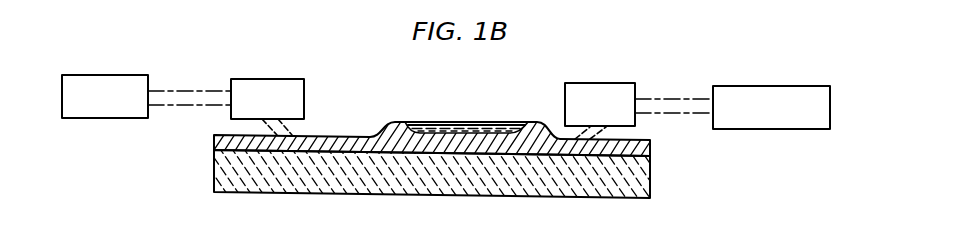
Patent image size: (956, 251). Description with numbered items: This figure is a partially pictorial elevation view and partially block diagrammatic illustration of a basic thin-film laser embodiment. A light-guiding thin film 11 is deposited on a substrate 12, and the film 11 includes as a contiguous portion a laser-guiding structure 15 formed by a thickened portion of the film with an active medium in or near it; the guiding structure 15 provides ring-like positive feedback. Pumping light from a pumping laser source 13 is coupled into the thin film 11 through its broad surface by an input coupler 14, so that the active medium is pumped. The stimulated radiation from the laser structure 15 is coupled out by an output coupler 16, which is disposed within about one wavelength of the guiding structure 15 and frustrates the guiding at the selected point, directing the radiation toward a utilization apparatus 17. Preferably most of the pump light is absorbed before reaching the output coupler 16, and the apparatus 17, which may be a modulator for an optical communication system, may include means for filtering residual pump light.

The light-guiding thin film 11 is at (214, 135).
The substrate 12 is at (627, 190).
The pumping laser source 13 is at (87, 113).
The input coupler 14 is at (246, 79).
The laser-guiding structure 15 is at (528, 122).
The output coupler 16 is at (630, 65).
The utilization apparatus 17 is at (773, 122).